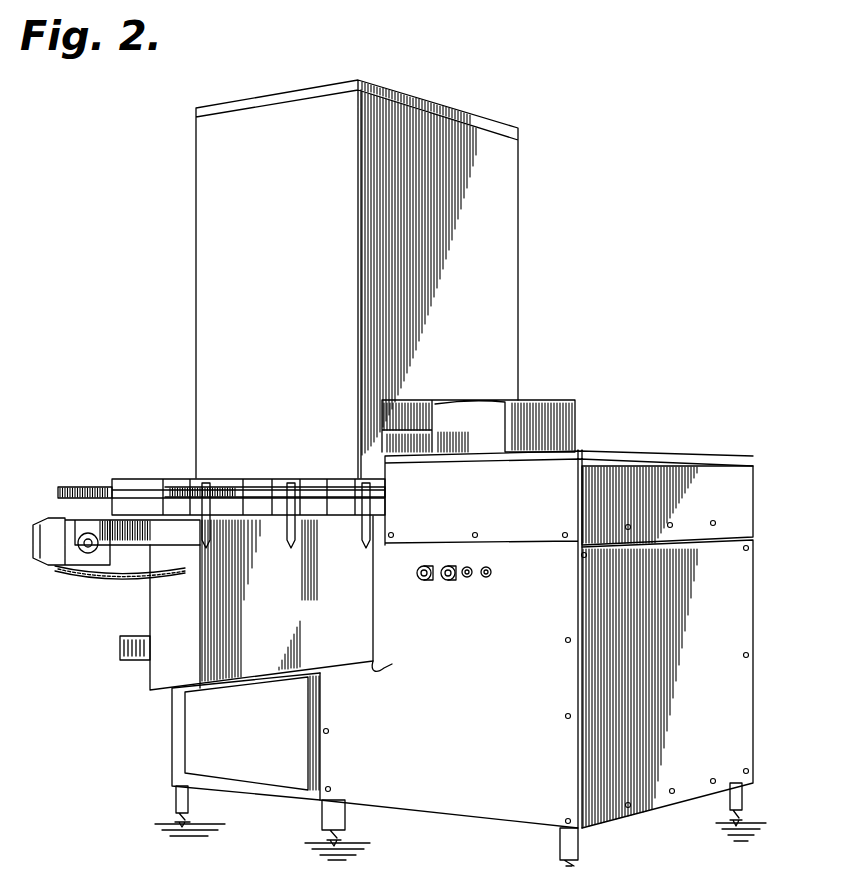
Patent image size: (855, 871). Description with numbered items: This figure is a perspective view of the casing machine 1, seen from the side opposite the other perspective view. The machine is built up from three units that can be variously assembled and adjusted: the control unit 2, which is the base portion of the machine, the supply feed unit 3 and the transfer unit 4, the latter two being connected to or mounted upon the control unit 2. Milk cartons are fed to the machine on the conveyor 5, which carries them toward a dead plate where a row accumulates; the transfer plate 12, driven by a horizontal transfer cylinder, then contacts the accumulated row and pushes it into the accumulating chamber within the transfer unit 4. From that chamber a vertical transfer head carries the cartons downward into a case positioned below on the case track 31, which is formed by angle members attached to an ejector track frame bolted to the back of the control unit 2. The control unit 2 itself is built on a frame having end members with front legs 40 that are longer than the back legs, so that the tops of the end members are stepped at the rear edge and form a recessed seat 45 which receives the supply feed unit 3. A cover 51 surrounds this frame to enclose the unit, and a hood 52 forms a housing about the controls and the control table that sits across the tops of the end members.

The casing machine 1 is at (193, 420).
The control unit 2 is at (713, 638).
The supply feed unit 3 is at (293, 592).
The transfer unit 4 is at (446, 256).
The conveyor 5 is at (125, 578).
The transfer plate 12 is at (478, 441).
The case track 31 is at (146, 635).
The front legs 40 is at (731, 803).
The recessed seat 45 is at (395, 663).
The cover 51 is at (655, 775).
The hood 52 is at (693, 470).